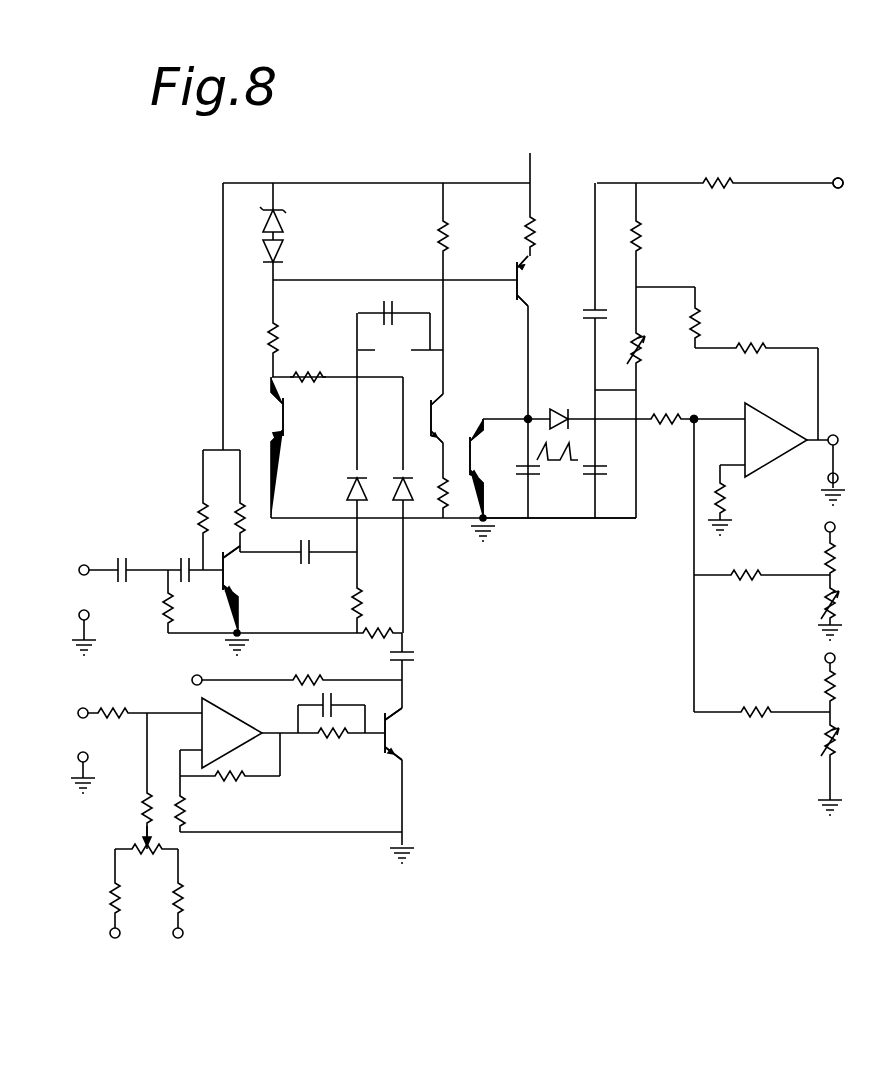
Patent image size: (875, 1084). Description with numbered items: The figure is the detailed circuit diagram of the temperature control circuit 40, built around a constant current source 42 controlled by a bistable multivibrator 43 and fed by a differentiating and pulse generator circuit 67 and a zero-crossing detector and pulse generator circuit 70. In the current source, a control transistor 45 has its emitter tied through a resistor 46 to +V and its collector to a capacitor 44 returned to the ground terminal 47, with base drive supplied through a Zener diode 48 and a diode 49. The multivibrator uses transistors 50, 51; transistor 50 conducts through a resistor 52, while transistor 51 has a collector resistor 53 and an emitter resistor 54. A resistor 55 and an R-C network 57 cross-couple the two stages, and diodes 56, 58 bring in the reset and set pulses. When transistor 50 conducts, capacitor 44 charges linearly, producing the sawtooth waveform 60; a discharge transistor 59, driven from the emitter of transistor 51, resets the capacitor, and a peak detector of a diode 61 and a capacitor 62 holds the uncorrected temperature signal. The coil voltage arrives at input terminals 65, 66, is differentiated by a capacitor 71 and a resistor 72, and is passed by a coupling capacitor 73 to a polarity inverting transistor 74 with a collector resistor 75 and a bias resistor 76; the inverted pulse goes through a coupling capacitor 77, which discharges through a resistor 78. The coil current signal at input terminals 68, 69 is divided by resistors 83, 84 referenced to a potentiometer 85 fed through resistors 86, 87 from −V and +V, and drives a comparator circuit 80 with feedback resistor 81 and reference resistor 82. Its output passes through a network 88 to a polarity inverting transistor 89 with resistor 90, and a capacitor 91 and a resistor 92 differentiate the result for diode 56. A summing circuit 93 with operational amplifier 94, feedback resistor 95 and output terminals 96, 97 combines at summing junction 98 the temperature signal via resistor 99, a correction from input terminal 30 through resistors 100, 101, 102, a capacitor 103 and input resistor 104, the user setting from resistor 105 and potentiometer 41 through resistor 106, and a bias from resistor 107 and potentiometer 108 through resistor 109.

The temperature control circuit 40 is at (185, 292).
The constant current source 42 is at (415, 232).
The bistable multivibrator 43 is at (300, 490).
The differentiating and pulse generator circuit 67 is at (305, 600).
The zero-crossing detector and pulse generator circuit 70 is at (335, 800).
The Zener diode 48 is at (285, 212).
The diode 49 is at (285, 252).
The resistor 52 is at (268, 335).
The resistor 55 is at (305, 372).
The R-C network 57 is at (382, 308).
The resistor 53 is at (449, 236).
The resistor 46 is at (536, 232).
The control transistor 45 is at (522, 284).
The capacitor 103 is at (588, 322).
The resistor 101 is at (642, 235).
The adjustable resistor 102 is at (641, 353).
The resistor 100 is at (718, 180).
The power circuit input terminal 30 is at (836, 190).
The input resistor 104 is at (700, 320).
The negative feedback resistor 95 is at (750, 345).
The resistor 99 is at (665, 416).
The summing junction 98 is at (696, 416).
The operational amplifier 94 is at (782, 395).
The output terminal 96 is at (825, 445).
The output terminal 97 is at (828, 482).
The summing circuit 93 is at (753, 479).
The resistor 107 is at (825, 556).
The potentiometer 108 is at (825, 602).
The input resistor 109 is at (745, 580).
The resistor 105 is at (825, 686).
The input resistor 106 is at (752, 708).
The user adjustment potentiometer 41 is at (825, 742).
The discharge transistor 59 is at (472, 445).
The transistor 51 is at (436, 428).
The resistor 54 is at (438, 492).
The diode 56 is at (393, 486).
The second diode 58 is at (348, 488).
The diode 61 is at (560, 410).
The capacitor 44 is at (522, 478).
The sawtooth waveform 60 is at (560, 465).
The capacitor 62 is at (598, 480).
The ground terminal 47 is at (545, 522).
The transistor 50 is at (280, 416).
The collector resistor 75 is at (238, 505).
The resistor 76 is at (200, 505).
The input terminal 65 is at (85, 564).
The capacitor 71 is at (122, 557).
The coupling capacitor 73 is at (183, 556).
The polarity inverting transistor 74 is at (232, 583).
The coupling capacitor 77 is at (299, 550).
The resistor 72 is at (175, 605).
The input terminal 66 is at (90, 617).
The resistor 78 is at (362, 600).
The capacitor 91 is at (408, 650).
The resistor 92 is at (372, 637).
The input terminal 68 is at (84, 707).
The voltage divider resistor 83 is at (112, 707).
The input terminal 69 is at (89, 757).
The voltage divider resistor 84 is at (142, 810).
The potentiometer 85 is at (147, 856).
The resistor 86 is at (112, 895).
The resistor 87 is at (181, 895).
The comparator circuit 80 is at (238, 745).
The resistor 81 is at (240, 782).
The resistor 82 is at (186, 808).
The parallel resistor-capacitor network 88 is at (330, 742).
The resistor 90 is at (300, 684).
The polarity inverting transistor 89 is at (392, 735).